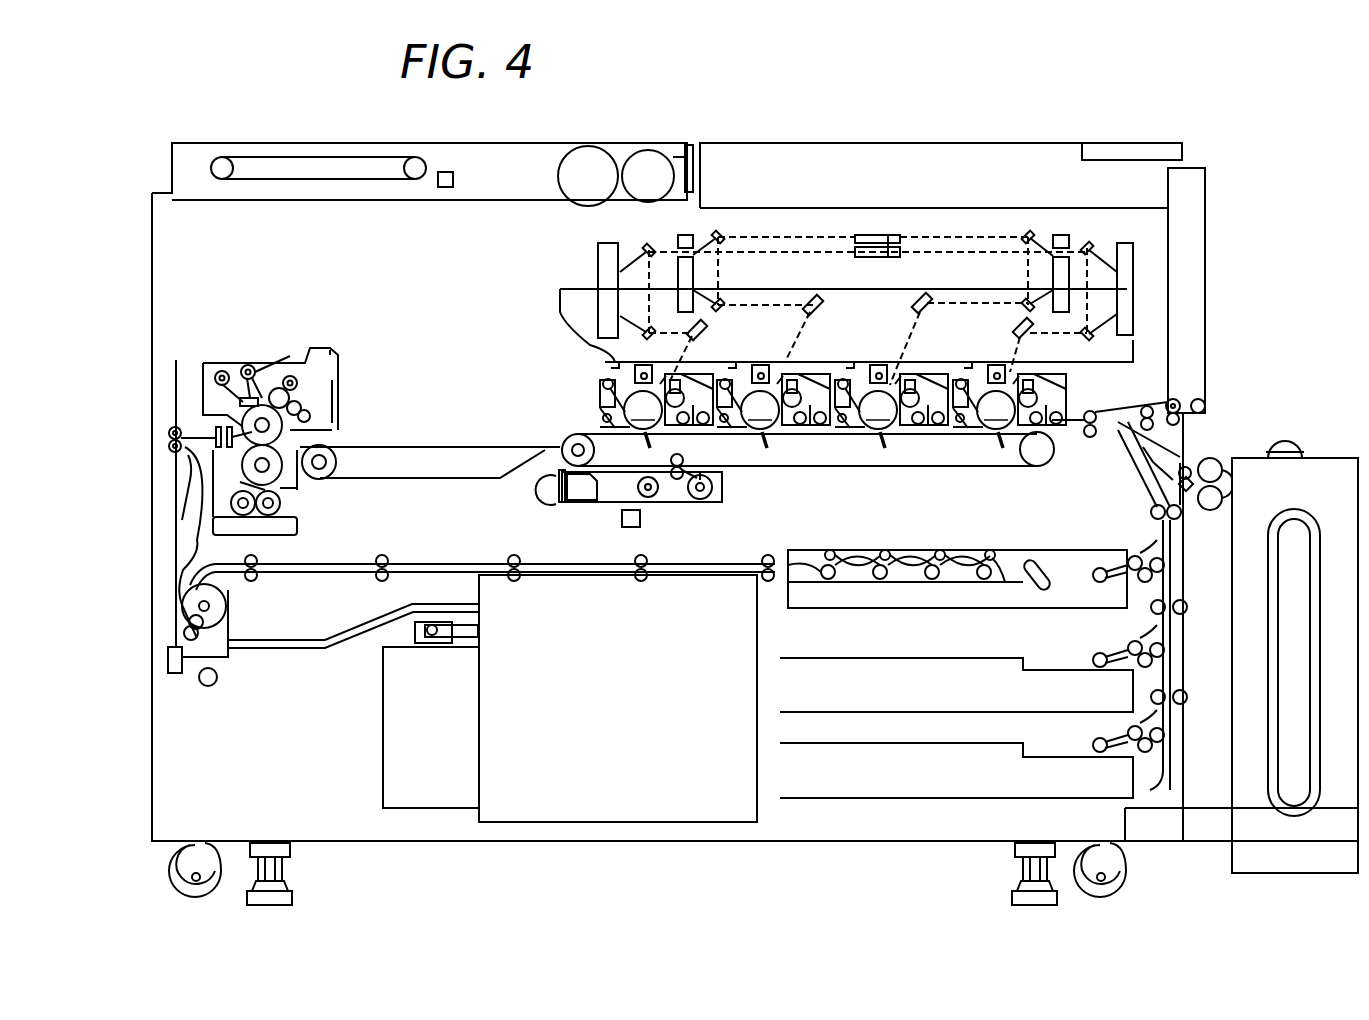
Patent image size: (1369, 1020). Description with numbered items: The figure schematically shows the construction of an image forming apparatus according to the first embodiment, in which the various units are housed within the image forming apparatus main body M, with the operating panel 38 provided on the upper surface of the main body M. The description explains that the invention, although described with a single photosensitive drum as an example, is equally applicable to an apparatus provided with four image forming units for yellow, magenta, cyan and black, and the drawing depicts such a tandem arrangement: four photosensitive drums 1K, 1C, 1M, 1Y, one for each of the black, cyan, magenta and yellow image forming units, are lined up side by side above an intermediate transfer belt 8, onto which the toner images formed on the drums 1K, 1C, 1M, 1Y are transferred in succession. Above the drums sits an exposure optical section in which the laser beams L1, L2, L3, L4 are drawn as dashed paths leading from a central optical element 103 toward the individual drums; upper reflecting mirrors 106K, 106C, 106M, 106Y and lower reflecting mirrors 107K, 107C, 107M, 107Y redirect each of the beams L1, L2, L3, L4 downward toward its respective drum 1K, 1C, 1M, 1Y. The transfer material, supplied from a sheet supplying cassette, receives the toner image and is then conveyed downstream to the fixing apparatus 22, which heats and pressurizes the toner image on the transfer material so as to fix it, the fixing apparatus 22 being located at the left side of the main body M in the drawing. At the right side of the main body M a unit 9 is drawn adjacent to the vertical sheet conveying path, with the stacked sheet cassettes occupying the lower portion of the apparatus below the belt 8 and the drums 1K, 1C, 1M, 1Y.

The reflection mirror (cyan) 106C is at (718, 233).
The image forming apparatus main body M is at (938, 142).
The reflection mirror (magenta) 106M is at (1030, 233).
The operating panel 38 is at (1135, 147).
The laser beam L3 is at (813, 236).
The polygon mirror / beam sensor 103 is at (876, 235).
The laser beam L1 is at (983, 236).
The reflection mirror (black) 106K is at (646, 249).
The reflection mirror (yellow) 106Y is at (1090, 247).
The fixing apparatus 22 is at (247, 370).
The reflection mirror (black) 107K is at (646, 334).
The reflection mirror (cyan) 107C is at (721, 308).
The laser beam L4 is at (833, 258).
The laser beam L2 is at (928, 253).
The reflection mirror (magenta) 107M is at (1026, 309).
The reflection mirror (yellow) 107Y is at (1090, 338).
The photosensitive drum (black) 1K is at (665, 432).
The photosensitive drum (cyan) 1C is at (787, 433).
The intermediate transfer belt 8 is at (862, 470).
The photosensitive drum (magenta) 1M is at (905, 433).
The photosensitive drum (yellow) 1Y is at (1020, 435).
The sheet feeding / manual feed unit 9 is at (1180, 436).